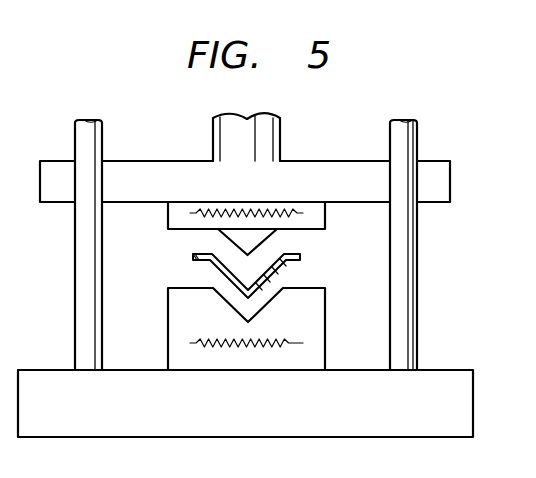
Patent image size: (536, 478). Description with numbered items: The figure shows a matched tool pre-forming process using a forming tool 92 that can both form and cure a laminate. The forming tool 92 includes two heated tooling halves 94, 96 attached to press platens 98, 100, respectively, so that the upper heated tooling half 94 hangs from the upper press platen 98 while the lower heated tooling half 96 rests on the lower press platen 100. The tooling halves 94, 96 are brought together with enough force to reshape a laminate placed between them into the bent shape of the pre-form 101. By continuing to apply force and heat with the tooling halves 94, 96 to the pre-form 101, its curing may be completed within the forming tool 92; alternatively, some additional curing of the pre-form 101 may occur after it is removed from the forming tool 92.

The forming tool 92 is at (116, 79).
The heated tooling half 94 is at (325, 214).
The heated tooling half 96 is at (168, 328).
The press platen 98 is at (433, 161).
The press platen 100 is at (443, 370).
The pre-form 101 is at (193, 257).